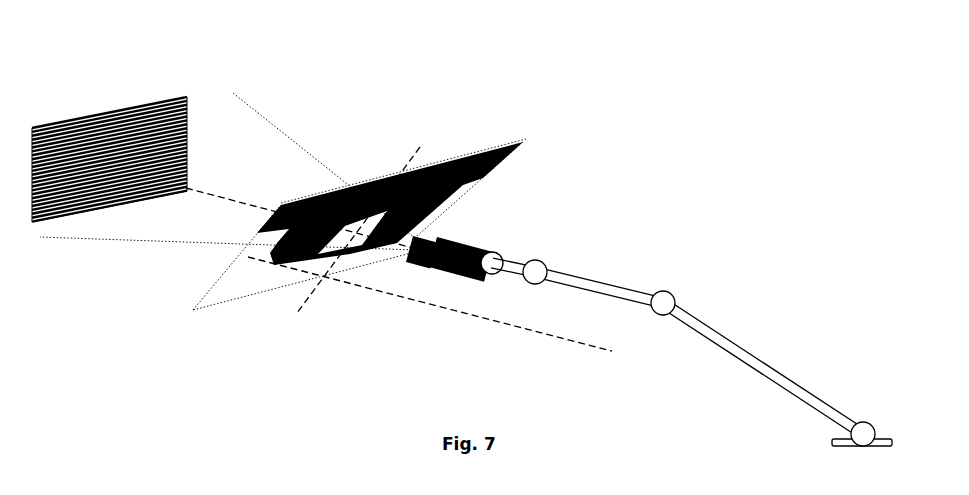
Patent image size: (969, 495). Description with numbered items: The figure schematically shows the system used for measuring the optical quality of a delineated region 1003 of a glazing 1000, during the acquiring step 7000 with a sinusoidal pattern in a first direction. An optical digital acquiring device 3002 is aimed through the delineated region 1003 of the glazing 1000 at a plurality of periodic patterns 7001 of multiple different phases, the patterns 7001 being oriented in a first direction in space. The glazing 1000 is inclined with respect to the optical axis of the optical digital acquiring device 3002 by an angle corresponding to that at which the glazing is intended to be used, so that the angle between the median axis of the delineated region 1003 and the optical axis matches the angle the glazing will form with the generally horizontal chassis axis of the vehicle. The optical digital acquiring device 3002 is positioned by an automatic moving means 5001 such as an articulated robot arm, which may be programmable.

The acquiring step 7000 is at (397, 78).
The periodic patterns 7001 is at (108, 112).
The glazing 1000 is at (218, 284).
The delineated region 1003 is at (366, 194).
The optical digital acquiring device 3002 is at (463, 243).
The automatic moving means 5001 is at (737, 345).